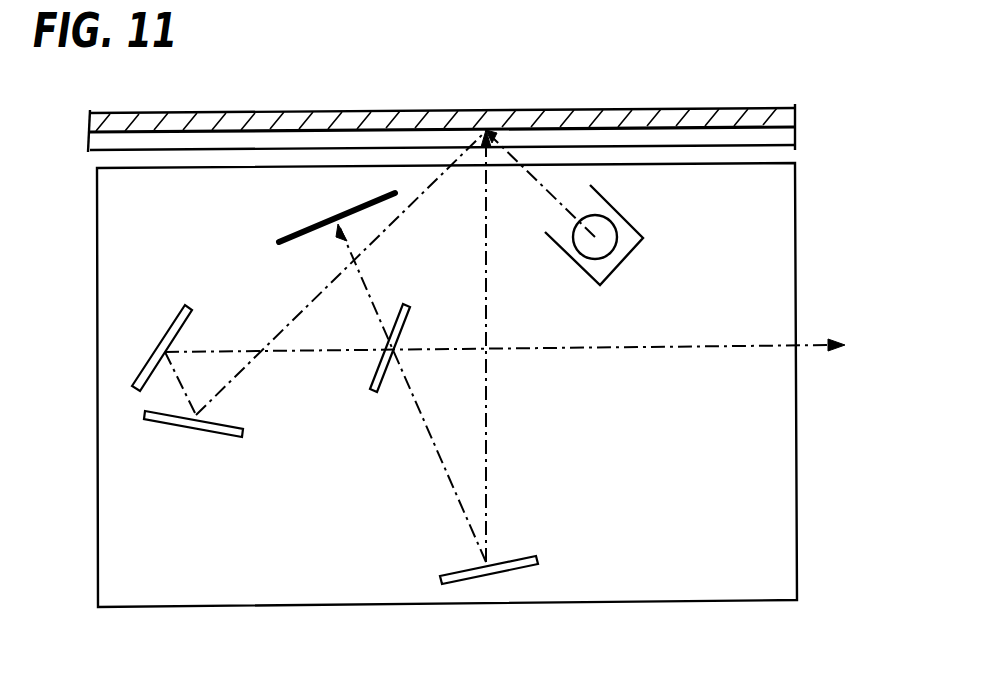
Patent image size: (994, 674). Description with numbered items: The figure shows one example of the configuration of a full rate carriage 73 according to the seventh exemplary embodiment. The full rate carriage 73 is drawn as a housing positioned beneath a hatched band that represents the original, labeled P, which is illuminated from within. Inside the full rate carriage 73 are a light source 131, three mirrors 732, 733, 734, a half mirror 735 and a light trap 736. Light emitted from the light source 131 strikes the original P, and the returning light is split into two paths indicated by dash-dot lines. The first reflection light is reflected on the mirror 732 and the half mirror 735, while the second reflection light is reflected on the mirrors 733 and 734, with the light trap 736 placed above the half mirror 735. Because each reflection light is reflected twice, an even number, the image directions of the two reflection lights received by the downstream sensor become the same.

The document (original) P is at (797, 122).
The full rate carriage 73 is at (802, 229).
The light source 131 is at (615, 211).
The mirror 732 is at (527, 554).
The mirror 733 is at (219, 438).
The mirror 734 is at (174, 322).
The half mirror 735 is at (372, 394).
The light trap 736 is at (306, 232).